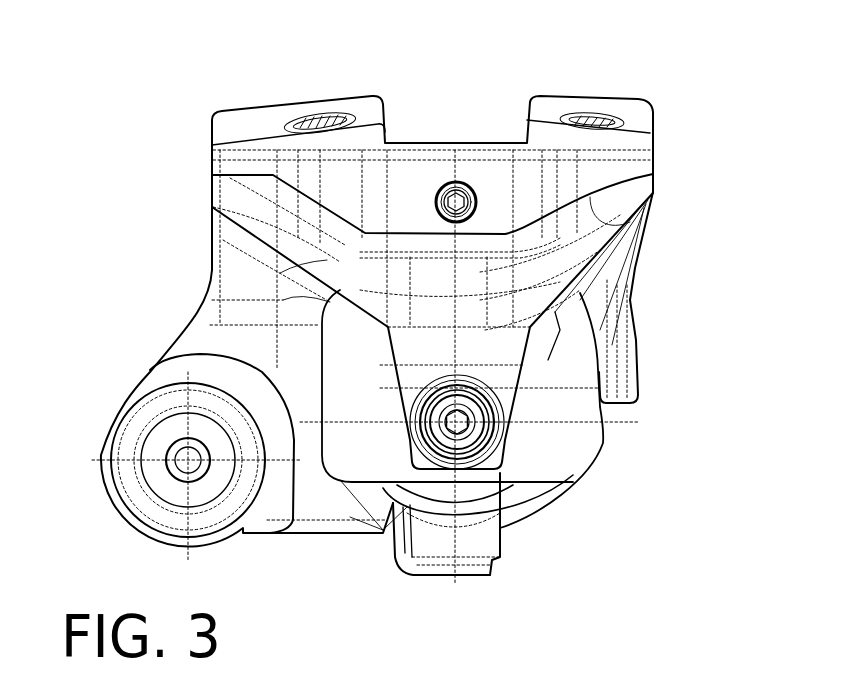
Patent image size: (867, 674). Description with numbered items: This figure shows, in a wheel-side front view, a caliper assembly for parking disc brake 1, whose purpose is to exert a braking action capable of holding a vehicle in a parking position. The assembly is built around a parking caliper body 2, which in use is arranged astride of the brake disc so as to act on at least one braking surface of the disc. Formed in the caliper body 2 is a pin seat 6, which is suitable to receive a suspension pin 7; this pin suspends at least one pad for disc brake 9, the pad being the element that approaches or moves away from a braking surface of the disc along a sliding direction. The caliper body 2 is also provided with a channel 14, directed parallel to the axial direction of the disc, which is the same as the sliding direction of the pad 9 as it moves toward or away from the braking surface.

The caliper assembly for parking disc brake 1 is at (159, 209).
The parking caliper body 2 is at (627, 222).
The pin seat 6 is at (476, 190).
The suspension pin 7 is at (440, 186).
The pad for disc brake 9 is at (557, 450).
The channel 14 is at (455, 128).